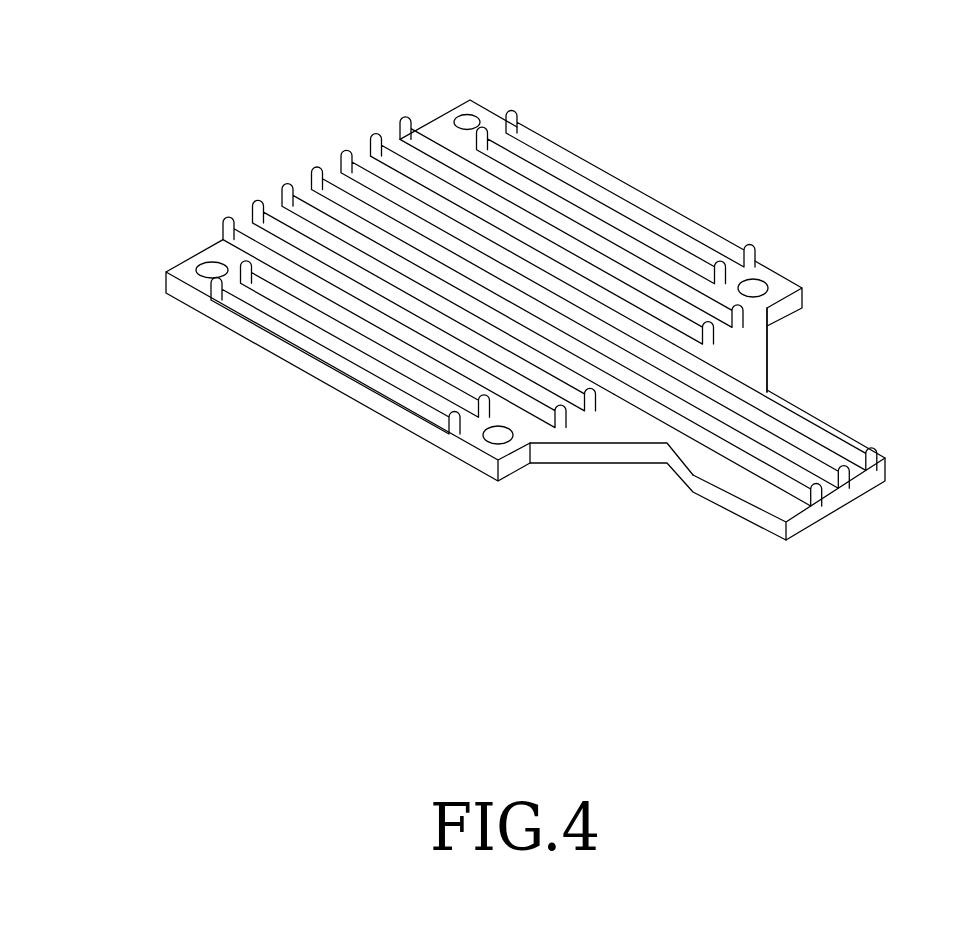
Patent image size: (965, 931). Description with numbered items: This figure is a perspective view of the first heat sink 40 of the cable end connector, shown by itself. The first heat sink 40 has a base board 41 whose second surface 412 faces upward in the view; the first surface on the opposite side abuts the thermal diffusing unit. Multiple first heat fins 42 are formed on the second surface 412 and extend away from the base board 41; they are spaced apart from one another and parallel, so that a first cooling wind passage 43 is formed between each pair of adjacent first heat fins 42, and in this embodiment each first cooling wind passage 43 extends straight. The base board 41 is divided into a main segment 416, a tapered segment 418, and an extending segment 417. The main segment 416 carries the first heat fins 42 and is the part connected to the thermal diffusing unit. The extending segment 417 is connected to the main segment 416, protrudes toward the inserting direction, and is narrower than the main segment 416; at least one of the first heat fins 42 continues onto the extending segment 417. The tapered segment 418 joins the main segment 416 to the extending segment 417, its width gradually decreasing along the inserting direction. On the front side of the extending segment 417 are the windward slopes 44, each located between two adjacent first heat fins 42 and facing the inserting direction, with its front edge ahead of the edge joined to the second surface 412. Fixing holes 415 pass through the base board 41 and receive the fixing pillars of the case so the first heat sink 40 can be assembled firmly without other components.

The first heat sink 40 is at (152, 74).
The base board 41 is at (603, 452).
The first heat fins 42 is at (640, 182).
The first cooling wind passages 43 is at (735, 268).
The windward slopes 44 is at (817, 497).
The second surface 412 is at (472, 442).
The fixing holes 415 is at (465, 118).
The main segment 416 is at (187, 265).
The extending segment 417 is at (750, 362).
The tapered segment 418 is at (762, 518).